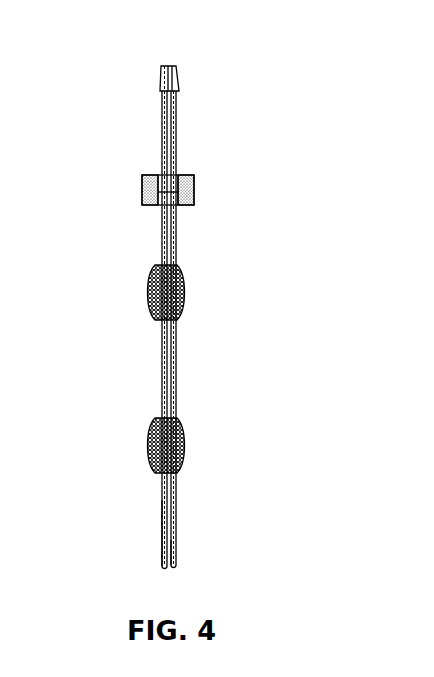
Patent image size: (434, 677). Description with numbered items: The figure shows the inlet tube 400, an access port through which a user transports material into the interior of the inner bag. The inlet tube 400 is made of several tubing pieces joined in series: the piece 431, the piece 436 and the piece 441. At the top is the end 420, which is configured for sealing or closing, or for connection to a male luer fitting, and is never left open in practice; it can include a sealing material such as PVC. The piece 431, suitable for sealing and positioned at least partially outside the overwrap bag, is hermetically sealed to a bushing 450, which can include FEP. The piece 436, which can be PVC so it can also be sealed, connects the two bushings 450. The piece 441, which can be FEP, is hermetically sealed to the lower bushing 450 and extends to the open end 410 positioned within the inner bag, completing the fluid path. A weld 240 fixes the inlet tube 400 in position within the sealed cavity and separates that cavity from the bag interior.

The inlet tube 400 is at (293, 448).
The open end 410 is at (170, 568).
The end 420 is at (169, 65).
The piece 431 is at (162, 140).
The piece 436 is at (161, 367).
The piece 441 is at (151, 520).
The bushing 450 is at (138, 295).
The weld 240 is at (194, 192).